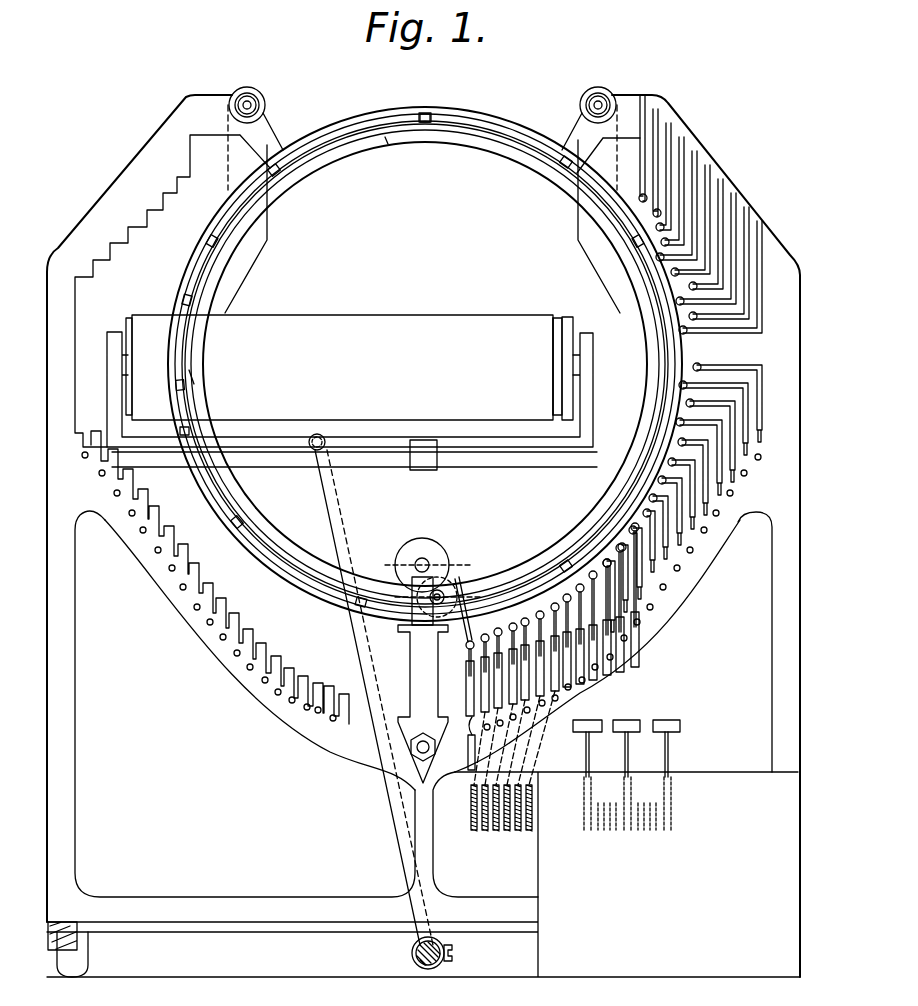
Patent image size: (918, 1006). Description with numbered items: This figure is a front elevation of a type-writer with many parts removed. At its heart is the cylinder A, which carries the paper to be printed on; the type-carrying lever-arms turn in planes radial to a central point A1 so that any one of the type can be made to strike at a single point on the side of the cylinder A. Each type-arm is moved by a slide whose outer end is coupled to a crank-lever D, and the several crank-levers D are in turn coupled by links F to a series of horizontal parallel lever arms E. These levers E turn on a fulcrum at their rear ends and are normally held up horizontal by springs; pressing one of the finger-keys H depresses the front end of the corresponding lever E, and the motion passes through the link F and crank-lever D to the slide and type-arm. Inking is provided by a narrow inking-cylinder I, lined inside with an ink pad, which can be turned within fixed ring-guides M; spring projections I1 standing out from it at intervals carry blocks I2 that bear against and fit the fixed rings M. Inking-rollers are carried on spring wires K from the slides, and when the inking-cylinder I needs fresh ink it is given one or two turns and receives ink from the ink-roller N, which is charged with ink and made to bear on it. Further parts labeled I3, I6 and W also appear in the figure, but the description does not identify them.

The cylinder A is at (349, 367).
The central point A1 is at (420, 366).
The crank-lever D is at (652, 180).
The horizontal parallel lever arms E is at (481, 832).
The links F is at (468, 765).
The finger-keys H is at (626, 739).
The inking-cylinder I is at (318, 160).
The spring projections I1 is at (191, 378).
The blocks I2 is at (427, 112).
The rail block lower left I3 is at (179, 432).
The rail clip I6 is at (390, 148).
The spring wires K is at (463, 623).
The fixed ring-guides M is at (505, 126).
The ink-roller N is at (430, 548).
The rod W is at (380, 701).